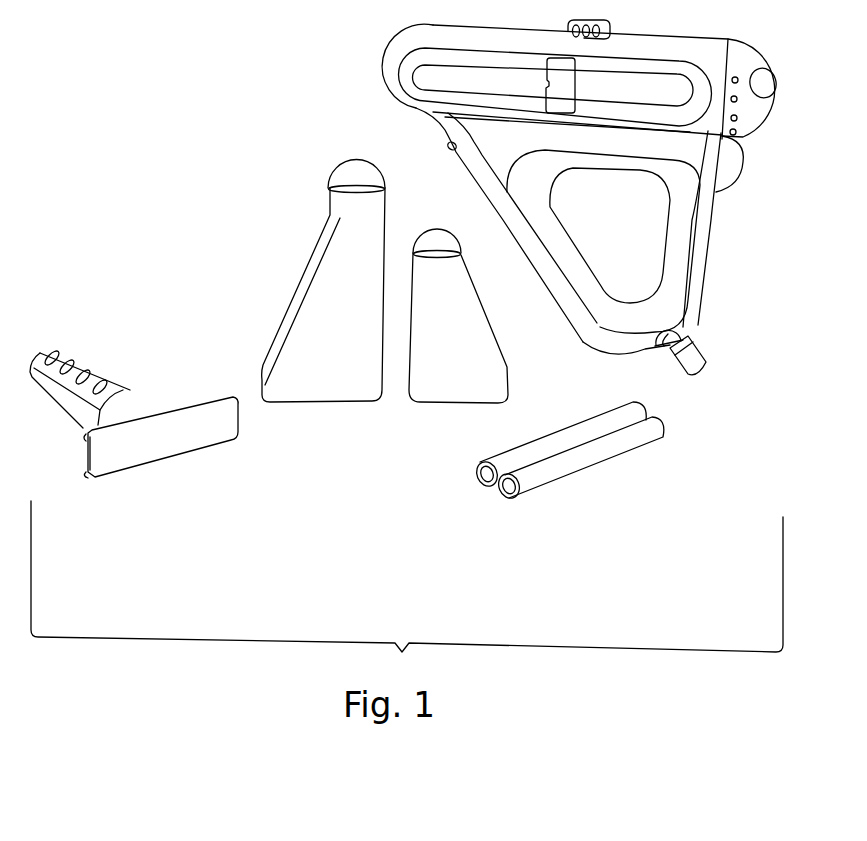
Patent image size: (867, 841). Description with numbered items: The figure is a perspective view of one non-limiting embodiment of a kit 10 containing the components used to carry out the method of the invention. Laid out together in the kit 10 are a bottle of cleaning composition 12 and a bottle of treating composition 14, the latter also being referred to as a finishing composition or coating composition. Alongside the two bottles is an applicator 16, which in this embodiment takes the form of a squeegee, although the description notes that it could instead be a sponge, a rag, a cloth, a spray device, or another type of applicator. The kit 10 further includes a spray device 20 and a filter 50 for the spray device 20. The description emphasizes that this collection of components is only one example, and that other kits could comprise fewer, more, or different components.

The kit 10 is at (232, 110).
The bottle of cleaning composition 12 is at (442, 403).
The bottle of treating composition 14 is at (318, 403).
The applicator 16 is at (170, 474).
The spray device 20 is at (378, 57).
The filter 50 is at (602, 480).